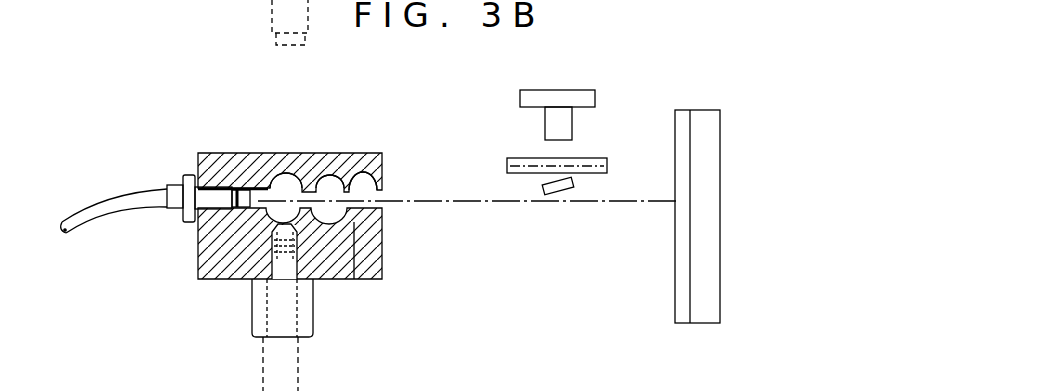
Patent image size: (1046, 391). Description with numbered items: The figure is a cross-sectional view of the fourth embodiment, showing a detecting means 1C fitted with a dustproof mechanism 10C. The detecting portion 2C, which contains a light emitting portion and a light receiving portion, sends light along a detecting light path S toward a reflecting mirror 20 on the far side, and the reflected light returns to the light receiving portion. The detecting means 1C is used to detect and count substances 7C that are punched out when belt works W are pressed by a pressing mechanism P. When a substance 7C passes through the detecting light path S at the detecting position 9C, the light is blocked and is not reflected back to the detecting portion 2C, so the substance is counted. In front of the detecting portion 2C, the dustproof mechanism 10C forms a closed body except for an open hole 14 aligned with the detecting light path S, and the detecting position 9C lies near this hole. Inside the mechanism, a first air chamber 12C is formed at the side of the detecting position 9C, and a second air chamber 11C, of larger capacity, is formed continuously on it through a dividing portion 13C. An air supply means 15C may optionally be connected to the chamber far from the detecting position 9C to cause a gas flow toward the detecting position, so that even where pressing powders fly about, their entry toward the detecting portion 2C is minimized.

The detecting means 1C is at (250, 148).
The detecting portion 2C is at (222, 200).
The substances to be detected 7C is at (554, 195).
The detecting position 9C is at (498, 190).
The dustproof mechanism 10C is at (355, 279).
The second air chamber 11C is at (289, 178).
The first air chamber 12C is at (363, 160).
The dividing portion 13C is at (318, 187).
The open hole 14 is at (378, 210).
The air supply means 15C is at (248, 303).
The reflecting mirror 20 is at (677, 146).
The pressing mechanism P is at (533, 87).
The belt works W is at (526, 166).
The detecting light path S is at (637, 203).